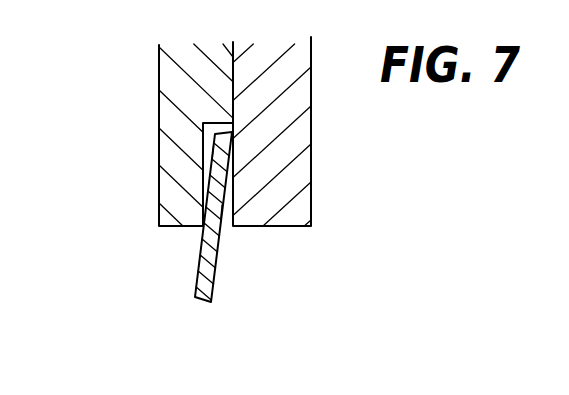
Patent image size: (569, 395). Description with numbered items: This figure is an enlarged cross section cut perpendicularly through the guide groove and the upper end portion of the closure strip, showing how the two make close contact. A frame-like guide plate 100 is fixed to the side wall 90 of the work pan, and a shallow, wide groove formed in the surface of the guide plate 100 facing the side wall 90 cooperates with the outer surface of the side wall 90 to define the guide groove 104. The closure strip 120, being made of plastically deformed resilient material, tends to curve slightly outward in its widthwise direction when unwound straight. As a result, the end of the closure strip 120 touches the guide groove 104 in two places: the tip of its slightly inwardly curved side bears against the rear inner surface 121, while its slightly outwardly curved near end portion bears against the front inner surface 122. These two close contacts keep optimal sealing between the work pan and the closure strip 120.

The guide plate 100 is at (170, 69).
The side wall 90 is at (300, 97).
The guide groove 104 is at (211, 131).
The closure strip 120 is at (200, 269).
The rear inner surface 121 is at (218, 212).
The front inner surface 122 is at (218, 161).